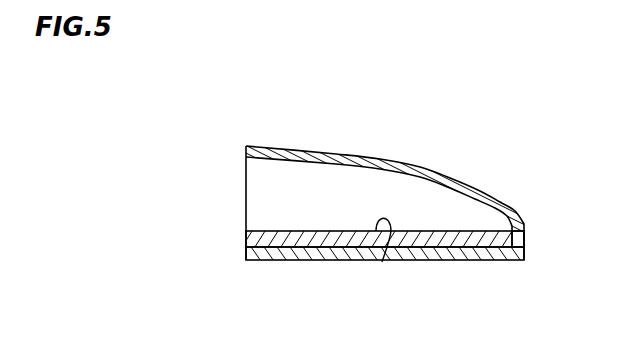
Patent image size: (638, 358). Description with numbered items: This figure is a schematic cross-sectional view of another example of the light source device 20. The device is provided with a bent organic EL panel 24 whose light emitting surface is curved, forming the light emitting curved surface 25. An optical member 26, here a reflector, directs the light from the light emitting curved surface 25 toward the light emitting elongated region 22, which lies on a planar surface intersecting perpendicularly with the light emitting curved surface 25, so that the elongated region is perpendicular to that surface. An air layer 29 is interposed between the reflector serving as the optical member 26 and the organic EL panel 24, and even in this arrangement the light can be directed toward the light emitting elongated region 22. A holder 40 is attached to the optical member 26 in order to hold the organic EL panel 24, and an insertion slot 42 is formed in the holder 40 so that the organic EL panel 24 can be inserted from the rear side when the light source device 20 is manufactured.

The light source device 20 is at (275, 76).
The light emitting elongated region 22 is at (246, 187).
The organic EL panel 24 is at (313, 242).
The light emitting curved surface 25 is at (382, 262).
The optical member 26 is at (451, 178).
The air layer 29 is at (333, 178).
The holder 40 is at (481, 258).
The insertion slot 42 is at (521, 239).